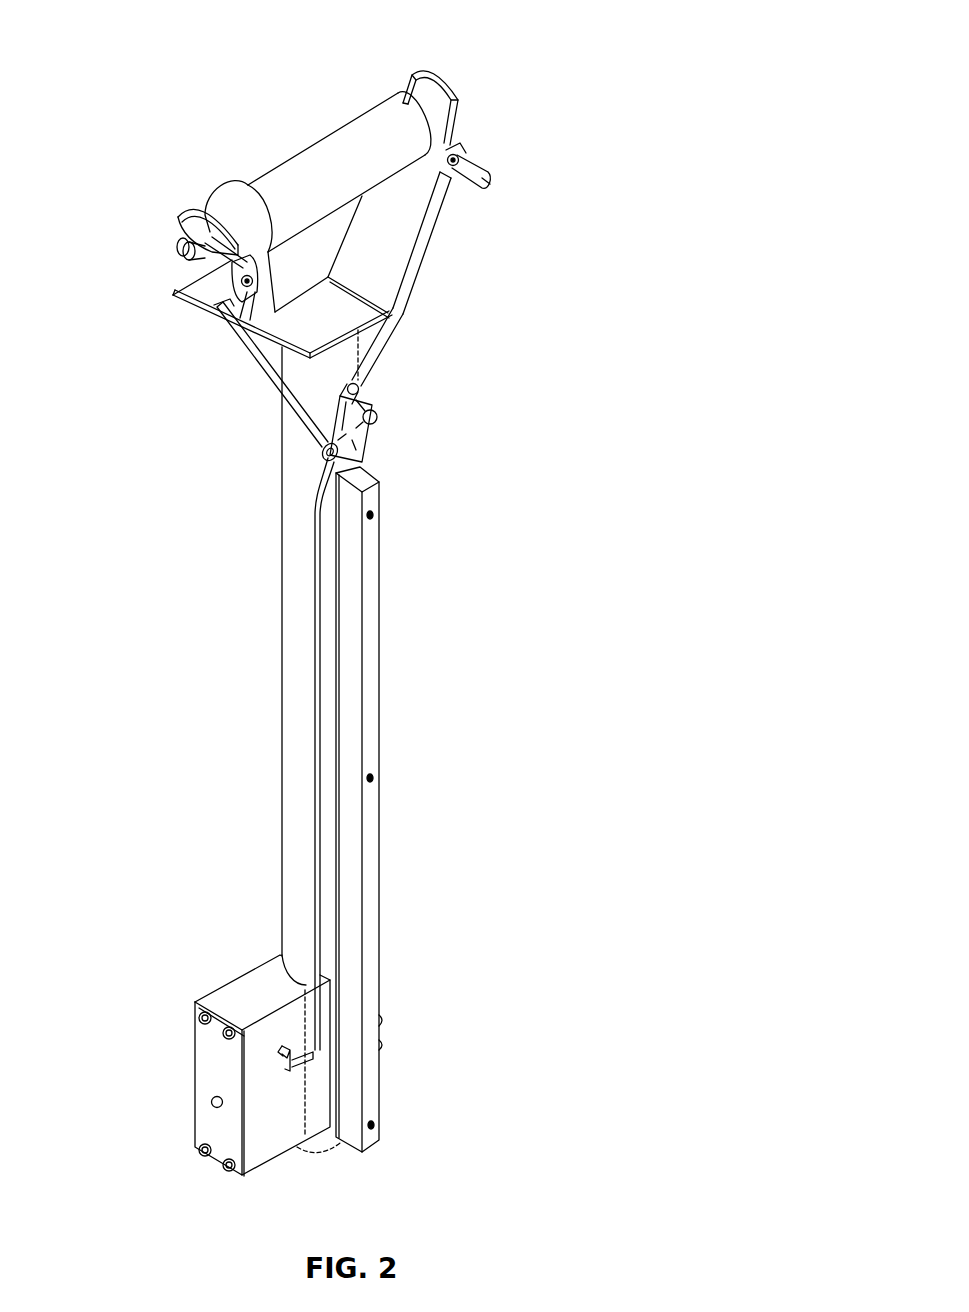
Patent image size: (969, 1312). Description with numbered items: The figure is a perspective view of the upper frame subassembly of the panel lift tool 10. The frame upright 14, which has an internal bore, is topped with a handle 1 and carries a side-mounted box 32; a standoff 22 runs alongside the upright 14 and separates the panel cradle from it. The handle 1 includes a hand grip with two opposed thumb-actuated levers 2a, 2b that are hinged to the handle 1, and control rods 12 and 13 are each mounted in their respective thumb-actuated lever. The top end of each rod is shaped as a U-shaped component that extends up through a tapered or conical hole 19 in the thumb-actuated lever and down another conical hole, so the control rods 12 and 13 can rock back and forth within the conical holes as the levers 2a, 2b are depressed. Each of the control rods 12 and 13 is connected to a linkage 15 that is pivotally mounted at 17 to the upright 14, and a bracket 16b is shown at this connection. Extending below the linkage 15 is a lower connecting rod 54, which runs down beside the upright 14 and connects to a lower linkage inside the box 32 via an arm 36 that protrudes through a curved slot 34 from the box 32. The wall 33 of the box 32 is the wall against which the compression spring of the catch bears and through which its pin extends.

The panel lift tool 10 is at (586, 102).
The handle 1 is at (302, 130).
The thumb-actuated lever 2a is at (453, 66).
The thumb-actuated lever 2b is at (166, 204).
The control rod 12 is at (455, 280).
The control rod 13 is at (242, 367).
The upright 14 is at (293, 628).
The linkage 15 is at (358, 389).
The bracket 16b is at (388, 440).
The pivot 17 is at (375, 419).
The hole 19 is at (489, 178).
The standoff 22 is at (392, 873).
The box 32 is at (248, 997).
The wall 33 is at (212, 1062).
The curved slot 34 is at (283, 1050).
The arm 36 is at (315, 1056).
The lower connecting rod 54 is at (313, 787).